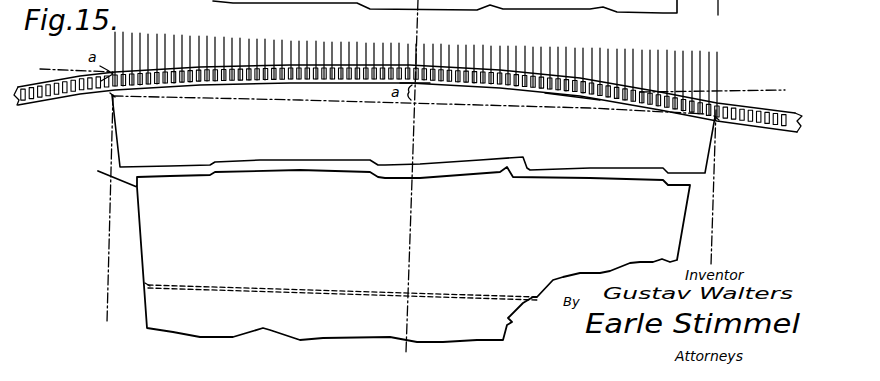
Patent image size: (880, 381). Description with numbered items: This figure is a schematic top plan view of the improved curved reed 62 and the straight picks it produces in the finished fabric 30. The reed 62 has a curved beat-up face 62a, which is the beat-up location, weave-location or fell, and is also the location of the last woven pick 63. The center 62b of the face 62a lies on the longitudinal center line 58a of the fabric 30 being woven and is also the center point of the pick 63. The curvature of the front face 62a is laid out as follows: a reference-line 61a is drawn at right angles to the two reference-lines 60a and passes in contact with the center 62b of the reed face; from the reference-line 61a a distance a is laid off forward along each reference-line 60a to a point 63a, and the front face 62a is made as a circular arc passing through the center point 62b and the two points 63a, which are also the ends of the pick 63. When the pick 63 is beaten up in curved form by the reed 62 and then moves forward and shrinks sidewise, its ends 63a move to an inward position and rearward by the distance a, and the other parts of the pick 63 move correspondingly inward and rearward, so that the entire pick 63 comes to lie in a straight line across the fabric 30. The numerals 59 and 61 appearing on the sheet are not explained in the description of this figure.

The fabric 30 is at (113, 161).
The longitudinal center line 58a is at (410, 218).
The bristles 59 is at (622, 52).
The reference-lines 60a is at (110, 200).
The upper element 61 is at (736, 7).
The reference-line 61a is at (760, 92).
The curved reed 62 is at (789, 132).
The curved beat-up face 62a is at (573, 93).
The center of the beat-up face 62b is at (418, 85).
The last woven pick 63 is at (295, 85).
The ends of the pick 63a is at (112, 96).